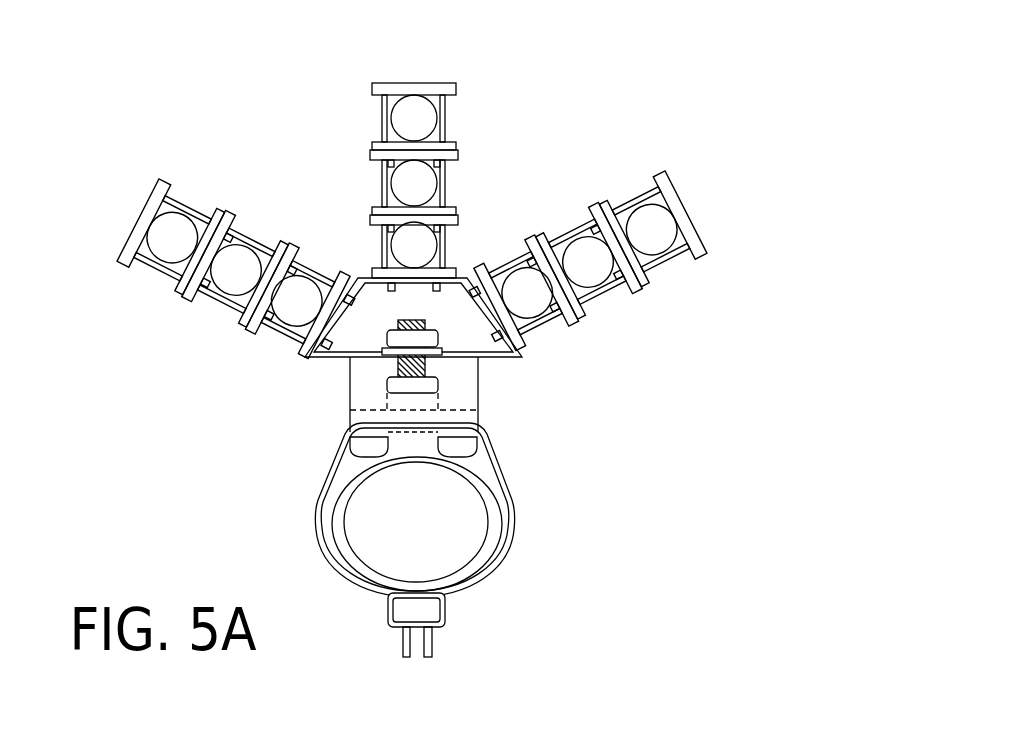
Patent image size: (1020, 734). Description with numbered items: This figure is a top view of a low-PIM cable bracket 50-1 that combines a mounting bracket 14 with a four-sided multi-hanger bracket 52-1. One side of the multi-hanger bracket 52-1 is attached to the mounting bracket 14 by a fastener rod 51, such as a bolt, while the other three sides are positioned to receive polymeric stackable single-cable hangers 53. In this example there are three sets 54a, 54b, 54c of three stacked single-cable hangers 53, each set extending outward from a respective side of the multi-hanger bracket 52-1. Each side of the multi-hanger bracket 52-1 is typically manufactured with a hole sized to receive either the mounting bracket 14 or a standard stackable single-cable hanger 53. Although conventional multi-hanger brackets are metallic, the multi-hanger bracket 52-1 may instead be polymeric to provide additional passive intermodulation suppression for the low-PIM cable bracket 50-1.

The low-PIM cable bracket 50-1 is at (785, 230).
The multi-hanger bracket 52-1 is at (312, 373).
The polymeric stackable single-cable hanger 53 is at (142, 285).
The set of stacked single-cable hangers 54a is at (350, 258).
The set of stacked single-cable hangers 54b is at (473, 72).
The set of stacked single-cable hangers 54c is at (542, 355).
The fastener rod 51 is at (450, 372).
The mounting bracket 14 is at (490, 407).